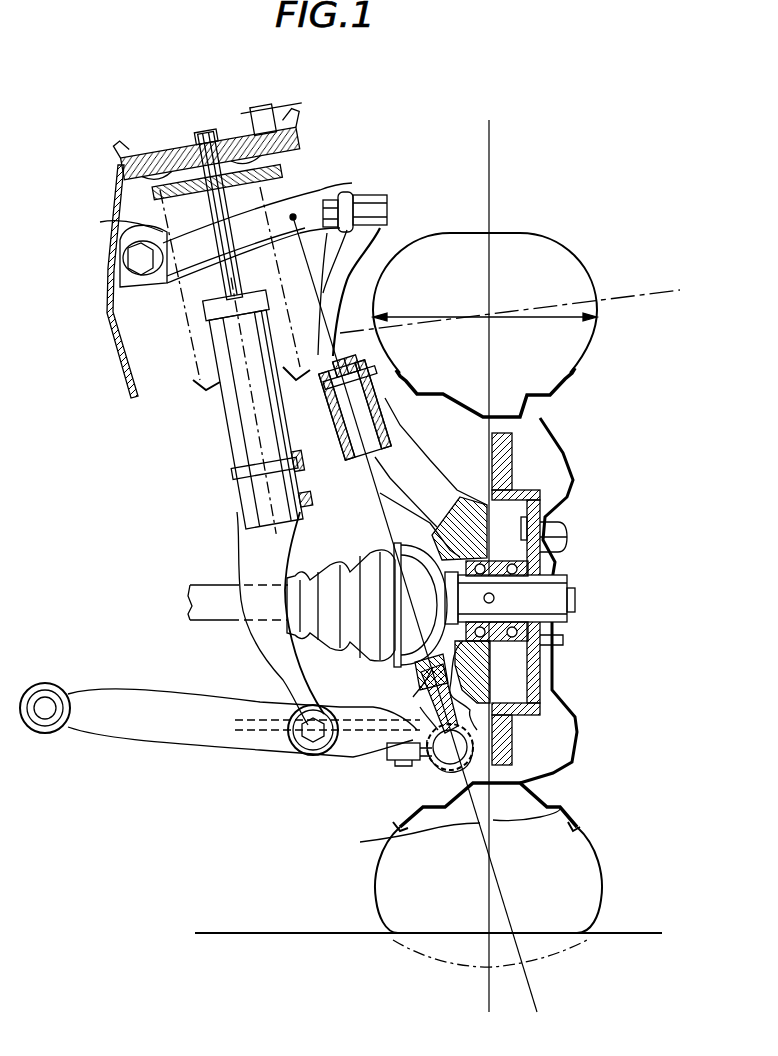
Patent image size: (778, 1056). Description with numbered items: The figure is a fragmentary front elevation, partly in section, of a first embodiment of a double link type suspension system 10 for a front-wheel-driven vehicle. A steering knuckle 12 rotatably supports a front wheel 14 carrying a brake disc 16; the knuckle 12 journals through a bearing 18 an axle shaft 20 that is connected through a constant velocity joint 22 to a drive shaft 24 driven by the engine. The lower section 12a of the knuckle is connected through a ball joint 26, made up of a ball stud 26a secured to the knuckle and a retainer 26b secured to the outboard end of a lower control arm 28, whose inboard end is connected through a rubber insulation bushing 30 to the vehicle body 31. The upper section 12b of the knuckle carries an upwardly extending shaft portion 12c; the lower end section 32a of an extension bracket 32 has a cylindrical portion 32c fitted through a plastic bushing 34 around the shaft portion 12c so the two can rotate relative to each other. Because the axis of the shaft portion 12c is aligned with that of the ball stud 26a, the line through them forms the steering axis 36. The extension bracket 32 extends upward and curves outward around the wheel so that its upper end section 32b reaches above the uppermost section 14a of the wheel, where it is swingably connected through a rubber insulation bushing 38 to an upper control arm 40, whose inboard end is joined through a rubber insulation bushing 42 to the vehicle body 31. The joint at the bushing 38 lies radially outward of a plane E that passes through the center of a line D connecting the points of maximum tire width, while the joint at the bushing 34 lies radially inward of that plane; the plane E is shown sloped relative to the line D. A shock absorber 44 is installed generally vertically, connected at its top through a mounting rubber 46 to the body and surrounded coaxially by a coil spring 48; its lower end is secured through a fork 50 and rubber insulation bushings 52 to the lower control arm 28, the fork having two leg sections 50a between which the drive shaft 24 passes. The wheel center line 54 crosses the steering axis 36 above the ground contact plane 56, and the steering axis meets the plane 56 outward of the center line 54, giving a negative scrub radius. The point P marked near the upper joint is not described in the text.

The double link type suspension system 10 is at (411, 92).
The steering knuckle 12 is at (450, 528).
The lower section of the knuckle 12a is at (457, 687).
The upper section of the knuckle 12b is at (430, 510).
The shaft portion 12c is at (365, 402).
The front wheel 14 is at (597, 316).
The uppermost section of the wheel 14a is at (517, 233).
The brake disc 16 is at (513, 468).
The bearing 18 is at (527, 640).
The axle shaft 20 is at (525, 593).
The constant velocity joint 22 is at (388, 653).
The drive shaft 24 is at (190, 614).
The ball joint 26 is at (428, 744).
The ball stud 26a is at (428, 700).
The retainer 26b is at (440, 760).
The lower control arm 28 is at (240, 755).
The rubber insulation bushing 30 is at (50, 730).
The vehicle body 31 is at (123, 330).
The extension bracket 32 is at (337, 287).
The lower end section of the extension member 32a is at (310, 470).
The upper end section of the extension bracket 32b is at (388, 210).
The cylindrical portion 32c is at (333, 412).
The bushing 34 is at (372, 418).
The steering axis 36 is at (473, 833).
The rubber insulation bushing 38 is at (358, 196).
The upper control arm 40 is at (308, 187).
The rubber insulation bushing 42 is at (128, 248).
The shock absorber 44 is at (238, 402).
The mounting rubber 46 is at (175, 165).
The coil spring 48 is at (180, 337).
The fork 50 is at (252, 546).
The leg section 50a is at (270, 650).
The rubber insulation bushing 52 is at (313, 748).
The center line of the wheel 54 is at (557, 812).
The plane 56 is at (622, 932).
The point P is at (293, 217).
The line D is at (570, 318).
The plane E is at (643, 285).